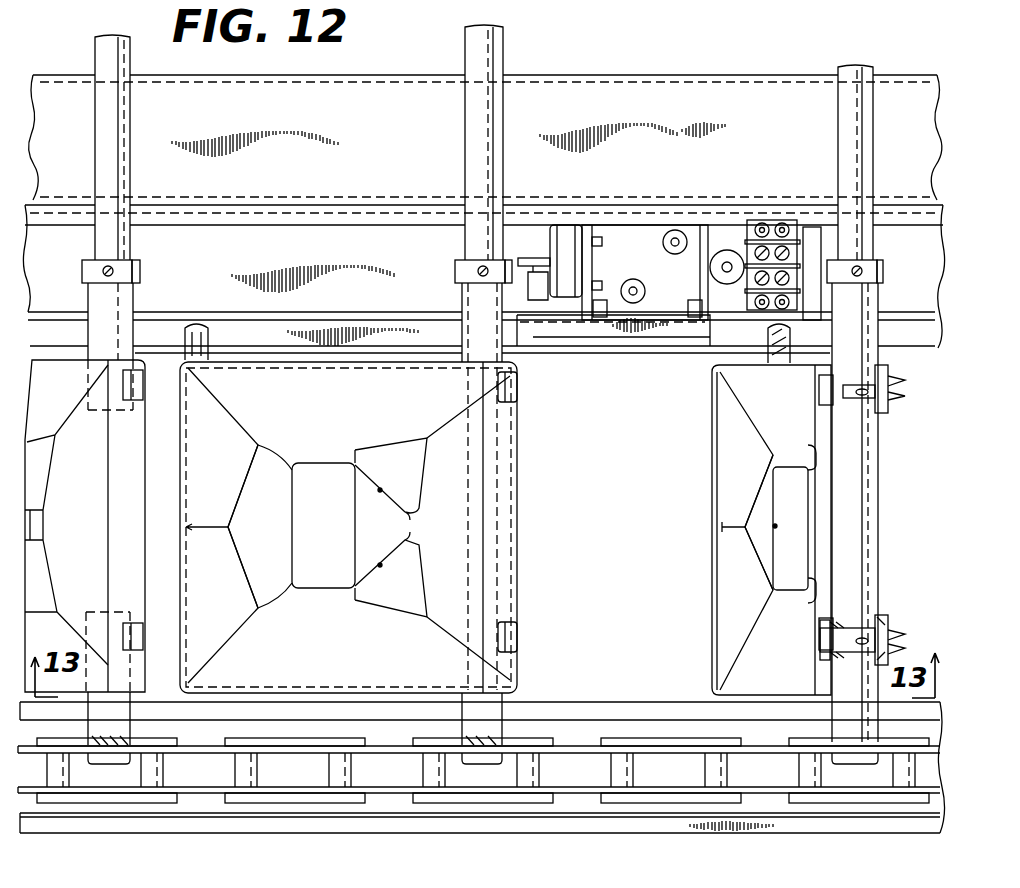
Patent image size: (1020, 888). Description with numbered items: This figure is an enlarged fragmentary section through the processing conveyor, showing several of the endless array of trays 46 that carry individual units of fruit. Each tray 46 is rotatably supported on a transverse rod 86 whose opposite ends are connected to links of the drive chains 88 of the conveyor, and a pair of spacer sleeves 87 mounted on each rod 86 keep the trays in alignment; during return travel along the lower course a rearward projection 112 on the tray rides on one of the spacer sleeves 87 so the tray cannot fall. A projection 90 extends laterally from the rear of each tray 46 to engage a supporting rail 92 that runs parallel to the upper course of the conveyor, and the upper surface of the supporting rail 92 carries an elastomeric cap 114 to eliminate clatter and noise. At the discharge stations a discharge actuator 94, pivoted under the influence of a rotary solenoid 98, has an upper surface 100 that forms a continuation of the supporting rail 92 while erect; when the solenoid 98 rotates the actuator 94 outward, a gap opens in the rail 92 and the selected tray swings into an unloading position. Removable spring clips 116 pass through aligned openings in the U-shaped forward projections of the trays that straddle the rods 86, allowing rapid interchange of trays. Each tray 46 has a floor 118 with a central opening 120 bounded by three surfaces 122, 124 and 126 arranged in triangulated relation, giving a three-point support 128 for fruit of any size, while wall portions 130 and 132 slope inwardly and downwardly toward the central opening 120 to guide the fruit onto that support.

The tray 46 is at (530, 498).
The transverse rod 86 is at (95, 55).
The spacer sleeve 87 is at (133, 297).
The drive chain 88 is at (418, 812).
The projection 90 is at (196, 322).
The supporting rail 92 is at (435, 328).
The discharge actuator 94 is at (661, 350).
The rotary solenoid 98 is at (568, 230).
The upper surface 100 is at (585, 328).
The rearward projection 112 is at (157, 672).
The elastomeric cap 114 is at (293, 322).
The spring clip 116 is at (507, 395).
The floor 118 is at (268, 503).
The central opening 120 is at (322, 567).
The surface 122 is at (317, 465).
The surface 124 is at (405, 512).
The surface 126 is at (357, 585).
The three-point support 128 is at (380, 563).
The wall portion 130 is at (362, 414).
The wall portion 132 is at (355, 675).